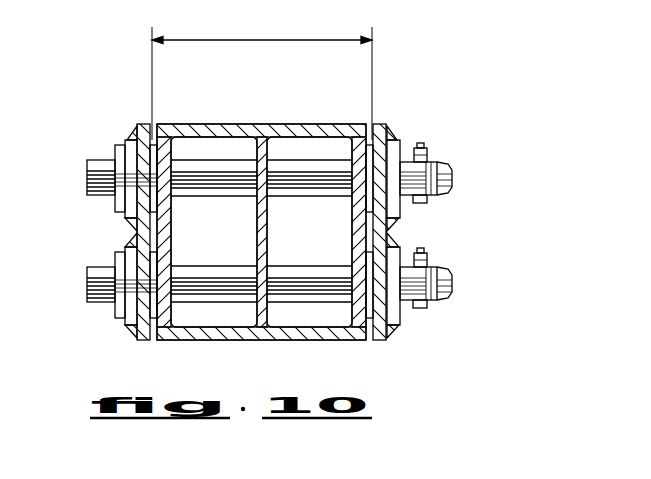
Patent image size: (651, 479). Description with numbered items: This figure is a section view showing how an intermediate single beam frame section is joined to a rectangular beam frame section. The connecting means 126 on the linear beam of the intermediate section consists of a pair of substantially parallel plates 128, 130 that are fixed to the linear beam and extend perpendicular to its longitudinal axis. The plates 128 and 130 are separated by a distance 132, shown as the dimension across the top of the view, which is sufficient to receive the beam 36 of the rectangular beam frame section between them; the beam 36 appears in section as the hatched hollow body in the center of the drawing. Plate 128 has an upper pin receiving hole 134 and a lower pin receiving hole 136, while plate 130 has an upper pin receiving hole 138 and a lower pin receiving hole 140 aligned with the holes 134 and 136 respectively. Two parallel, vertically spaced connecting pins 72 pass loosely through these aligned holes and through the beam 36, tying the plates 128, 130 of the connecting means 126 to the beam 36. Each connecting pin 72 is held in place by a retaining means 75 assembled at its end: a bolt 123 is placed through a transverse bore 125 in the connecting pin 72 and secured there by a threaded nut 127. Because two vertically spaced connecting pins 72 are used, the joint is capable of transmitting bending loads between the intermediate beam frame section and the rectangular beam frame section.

The beam 36 is at (218, 124).
The connecting pin 72 is at (87, 178).
The retaining means 75 is at (428, 153).
The bolt 123 is at (425, 144).
The transverse bore 125 is at (446, 198).
The connecting means 126 is at (261, 247).
The threaded nut 127 is at (437, 163).
The plate 128 is at (138, 340).
The plate 130 is at (385, 340).
The distance 132 is at (270, 40).
The upper pin receiving hole 134 is at (118, 163).
The lower pin receiving hole 136 is at (108, 300).
The upper pin receiving hole 138 is at (405, 162).
The lower pin receiving hole 140 is at (400, 306).